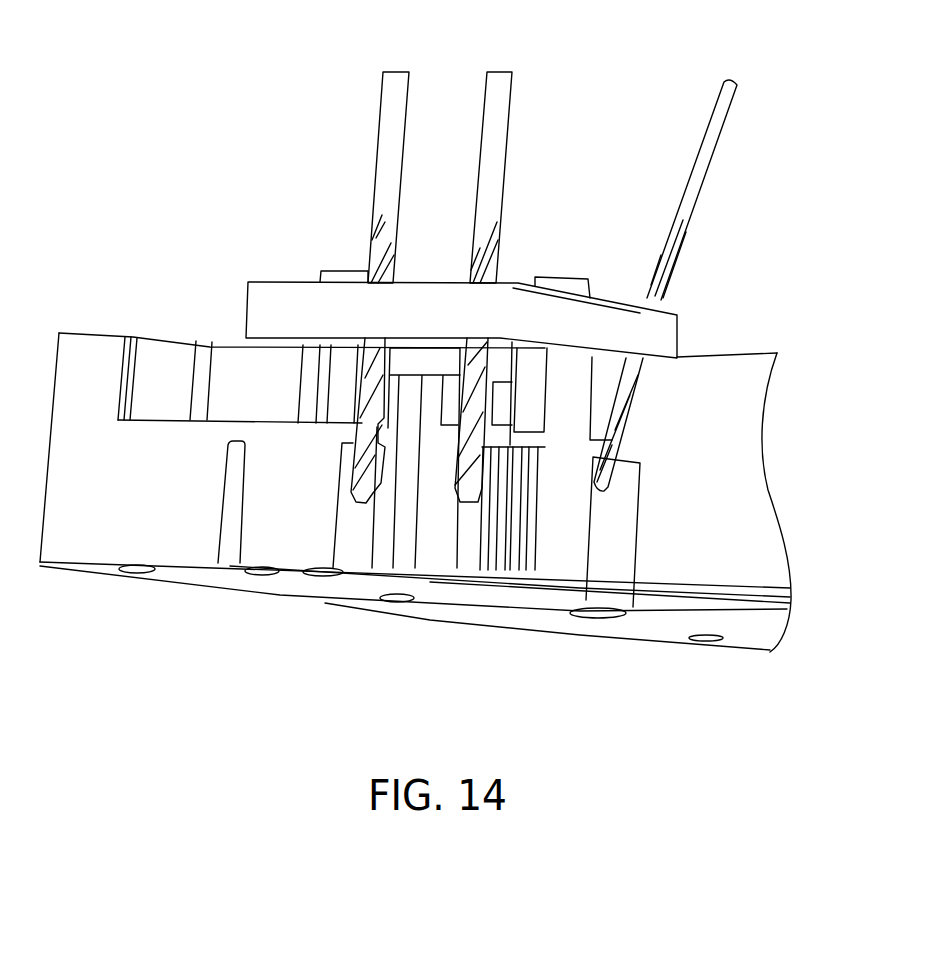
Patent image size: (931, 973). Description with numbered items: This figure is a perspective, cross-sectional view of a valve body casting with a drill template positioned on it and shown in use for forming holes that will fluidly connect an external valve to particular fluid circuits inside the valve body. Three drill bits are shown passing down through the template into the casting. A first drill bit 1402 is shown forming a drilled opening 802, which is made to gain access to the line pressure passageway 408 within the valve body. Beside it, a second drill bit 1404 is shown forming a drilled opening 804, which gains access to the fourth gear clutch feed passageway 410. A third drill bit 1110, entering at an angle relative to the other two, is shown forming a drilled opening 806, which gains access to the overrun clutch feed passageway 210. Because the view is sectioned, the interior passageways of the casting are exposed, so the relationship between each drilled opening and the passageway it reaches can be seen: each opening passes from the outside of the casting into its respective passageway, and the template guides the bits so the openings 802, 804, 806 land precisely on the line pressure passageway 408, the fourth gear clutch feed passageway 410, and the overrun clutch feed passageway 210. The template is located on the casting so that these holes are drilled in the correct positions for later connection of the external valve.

The drill bit 1402 is at (398, 70).
The drill bit 1404 is at (502, 70).
The drill bit 1110 is at (730, 78).
The drilled opening 802 is at (348, 432).
The drilled opening 804 is at (482, 468).
The drilled opening 806 is at (613, 450).
The line pressure passageway 408 is at (347, 535).
The fourth gear clutch feed passageway 410 is at (472, 525).
The overrun clutch feed passageway 210 is at (615, 537).